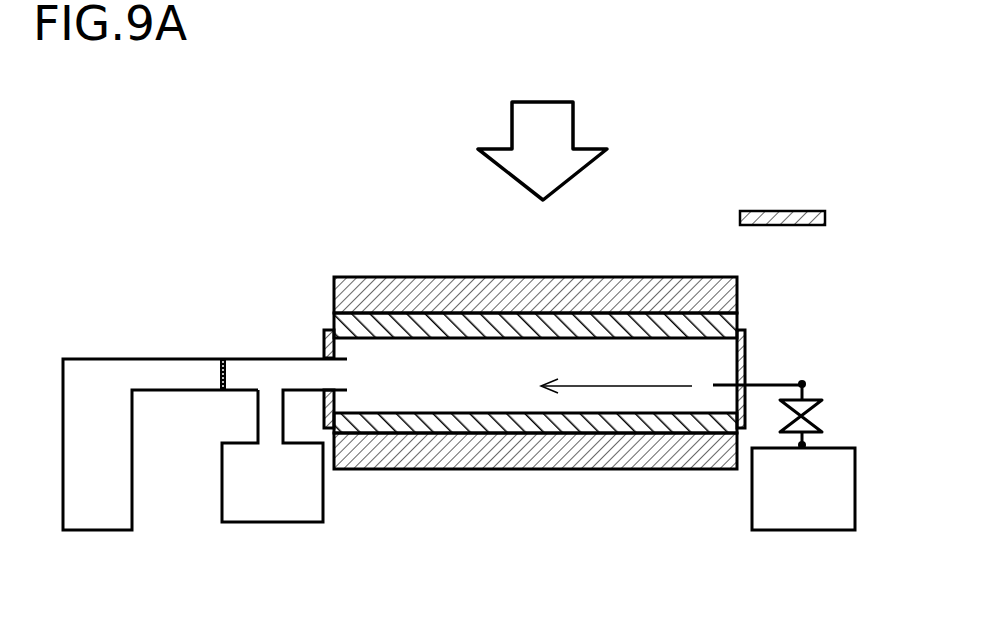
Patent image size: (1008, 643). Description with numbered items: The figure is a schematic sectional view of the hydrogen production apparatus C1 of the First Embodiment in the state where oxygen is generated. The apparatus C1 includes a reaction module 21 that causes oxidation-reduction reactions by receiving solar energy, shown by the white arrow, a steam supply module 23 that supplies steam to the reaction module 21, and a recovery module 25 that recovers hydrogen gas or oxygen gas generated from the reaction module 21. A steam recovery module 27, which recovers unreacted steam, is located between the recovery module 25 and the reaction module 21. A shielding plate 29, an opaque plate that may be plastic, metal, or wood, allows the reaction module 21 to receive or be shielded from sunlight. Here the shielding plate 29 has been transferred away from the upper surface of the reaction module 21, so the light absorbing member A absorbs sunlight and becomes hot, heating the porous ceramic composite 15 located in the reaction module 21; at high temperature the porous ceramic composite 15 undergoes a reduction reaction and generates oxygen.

The hydrogen production apparatus C1 is at (768, 100).
The reaction module 21 is at (532, 314).
The light absorbing member A is at (380, 292).
The porous ceramic composite 15 is at (435, 323).
The recovery module 25 is at (82, 358).
The steam recovery module 27 is at (315, 522).
The steam supply module 23 is at (830, 448).
The shielding plate 29 is at (770, 210).